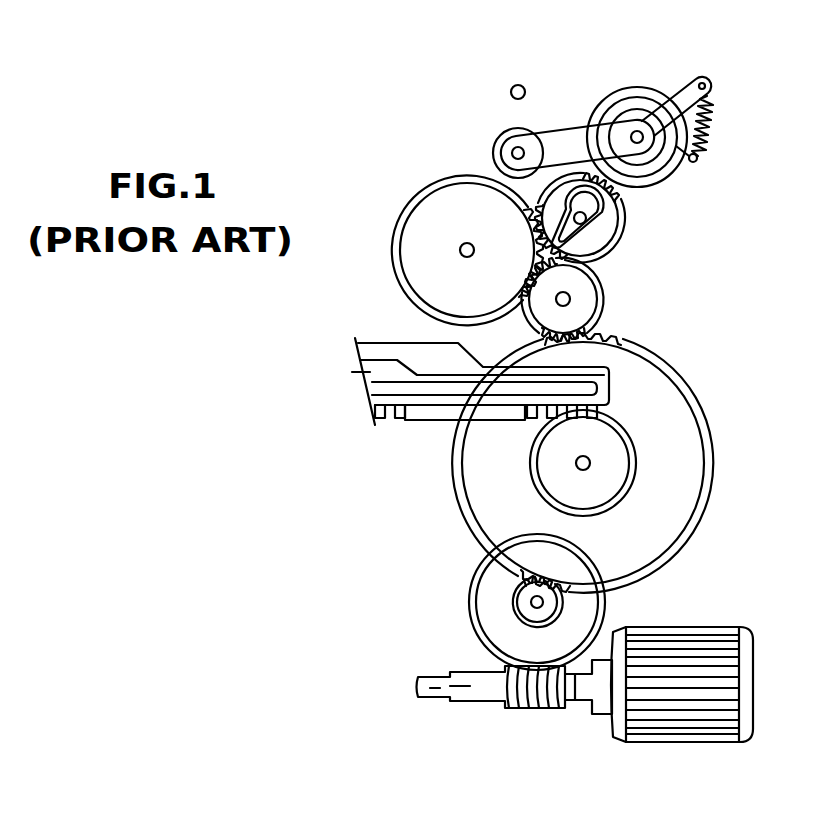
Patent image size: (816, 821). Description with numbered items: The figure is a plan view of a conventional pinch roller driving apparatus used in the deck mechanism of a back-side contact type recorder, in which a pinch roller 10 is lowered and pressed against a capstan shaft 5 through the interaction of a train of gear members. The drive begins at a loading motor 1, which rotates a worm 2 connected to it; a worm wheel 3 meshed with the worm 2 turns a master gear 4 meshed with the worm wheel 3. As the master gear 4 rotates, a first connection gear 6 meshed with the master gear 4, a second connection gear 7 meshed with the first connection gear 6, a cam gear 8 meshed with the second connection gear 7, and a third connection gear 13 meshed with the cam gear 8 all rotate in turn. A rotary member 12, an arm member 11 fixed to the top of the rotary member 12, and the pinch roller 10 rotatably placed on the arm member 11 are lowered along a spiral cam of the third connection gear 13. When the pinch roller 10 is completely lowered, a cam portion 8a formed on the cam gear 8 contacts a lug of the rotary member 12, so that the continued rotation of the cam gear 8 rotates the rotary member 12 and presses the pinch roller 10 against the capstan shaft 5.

The loading motor 1 is at (723, 626).
The worm 2 is at (514, 705).
The worm wheel 3 is at (468, 607).
The master gear 4 is at (459, 508).
The capstan shaft 5 is at (518, 85).
The first connection gear 6 is at (606, 296).
The second connection gear 7 is at (392, 257).
The cam gear 8 is at (624, 237).
The cam portion 8a is at (604, 205).
The pinch roller 10 is at (493, 150).
The arm member 11 is at (559, 130).
The rotary member 12 is at (640, 100).
The third connection gear 13 is at (612, 94).